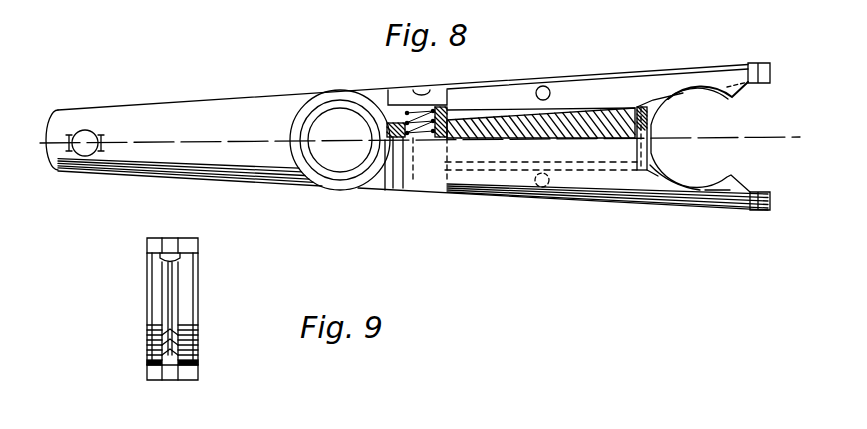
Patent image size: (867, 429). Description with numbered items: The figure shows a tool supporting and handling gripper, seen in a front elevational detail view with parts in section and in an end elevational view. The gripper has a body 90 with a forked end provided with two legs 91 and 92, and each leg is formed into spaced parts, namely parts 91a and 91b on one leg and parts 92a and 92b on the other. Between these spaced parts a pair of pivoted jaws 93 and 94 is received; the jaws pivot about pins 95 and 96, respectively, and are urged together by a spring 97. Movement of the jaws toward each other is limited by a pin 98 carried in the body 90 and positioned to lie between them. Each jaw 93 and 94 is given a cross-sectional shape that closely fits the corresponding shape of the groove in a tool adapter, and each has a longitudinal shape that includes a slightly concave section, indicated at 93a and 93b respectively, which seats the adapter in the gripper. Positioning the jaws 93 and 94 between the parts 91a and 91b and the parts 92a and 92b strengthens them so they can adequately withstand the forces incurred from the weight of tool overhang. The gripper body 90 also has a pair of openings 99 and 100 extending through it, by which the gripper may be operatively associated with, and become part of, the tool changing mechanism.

In FIG. 8, the body 90 is at (295, 183).
In FIG. 8, the leg 91 is at (770, 211).
In FIG. 9, the leg 91 is at (150, 368).
In FIG. 9, the spaced part 91a is at (155, 380).
In FIG. 9, the spaced part 91b is at (192, 372).
In FIG. 8, the leg 92 is at (767, 66).
In FIG. 9, the leg 92 is at (180, 247).
In FIG. 9, the spaced part 92a is at (155, 238).
In FIG. 9, the spaced part 92b is at (190, 238).
In FIG. 8, the jaw 93 is at (733, 183).
In FIG. 9, the jaw 93 is at (176, 373).
In FIG. 8, the concave section 93a is at (717, 191).
In FIG. 8, the concave section 93b is at (700, 92).
In FIG. 8, the jaw 94 is at (606, 87).
In FIG. 9, the jaw 94 is at (171, 246).
In FIG. 8, the pin 95 is at (542, 188).
In FIG. 8, the pin 96 is at (547, 86).
In FIG. 8, the spring 97 is at (440, 104).
In FIG. 8, the pin 98 is at (637, 150).
In FIG. 8, the opening 99 is at (88, 134).
In FIG. 8, the opening 100 is at (325, 125).